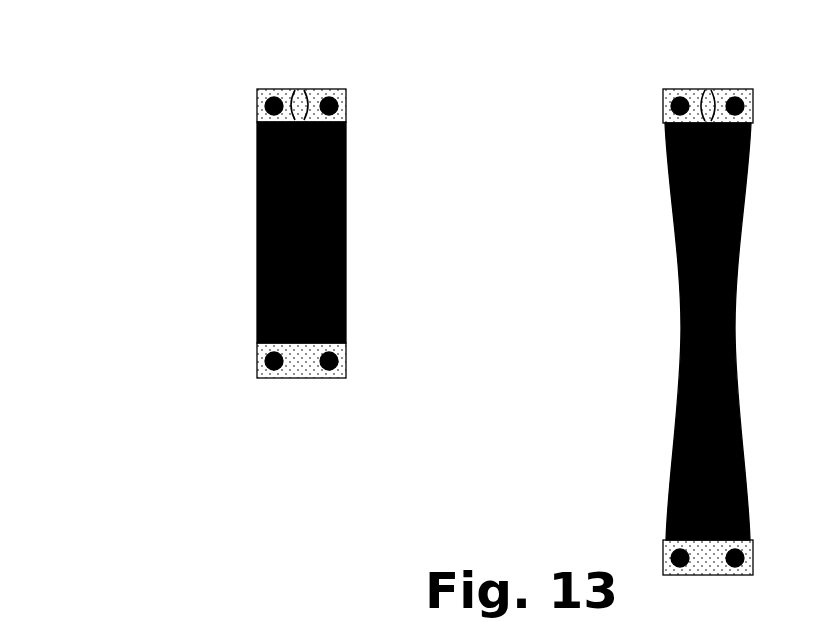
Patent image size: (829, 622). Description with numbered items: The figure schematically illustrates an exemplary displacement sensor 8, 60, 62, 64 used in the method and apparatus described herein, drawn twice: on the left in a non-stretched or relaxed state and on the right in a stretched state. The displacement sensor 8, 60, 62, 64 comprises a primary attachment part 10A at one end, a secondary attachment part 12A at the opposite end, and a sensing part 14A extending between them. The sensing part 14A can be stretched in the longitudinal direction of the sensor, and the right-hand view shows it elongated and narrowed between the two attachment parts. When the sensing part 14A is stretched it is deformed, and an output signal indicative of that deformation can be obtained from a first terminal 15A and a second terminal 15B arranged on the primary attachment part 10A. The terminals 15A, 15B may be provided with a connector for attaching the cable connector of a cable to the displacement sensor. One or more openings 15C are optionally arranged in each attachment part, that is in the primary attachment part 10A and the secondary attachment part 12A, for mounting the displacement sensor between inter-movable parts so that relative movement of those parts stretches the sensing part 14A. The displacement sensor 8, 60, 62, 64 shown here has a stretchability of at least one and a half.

The displacement sensor 8 is at (276, 259).
The displacement sensor 60 is at (276, 259).
The displacement sensor 62 is at (276, 259).
The displacement sensor 64 is at (250, 150).
The primary attachment part 10A is at (338, 90).
The secondary attachment part 12A is at (250, 350).
The sensing part 14A is at (250, 283).
The first terminal 15A is at (285, 92).
The second terminal 15B is at (298, 88).
The openings 15C is at (258, 100).